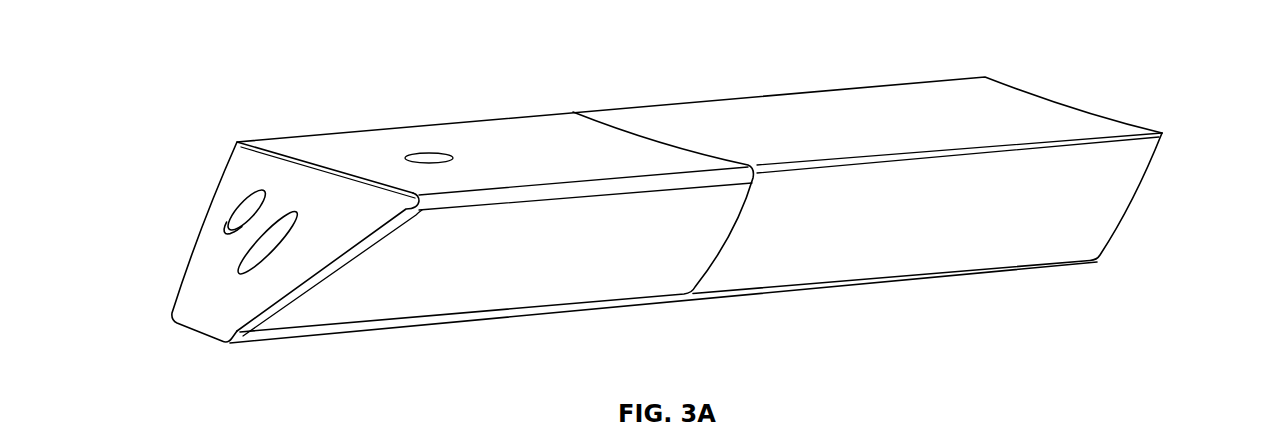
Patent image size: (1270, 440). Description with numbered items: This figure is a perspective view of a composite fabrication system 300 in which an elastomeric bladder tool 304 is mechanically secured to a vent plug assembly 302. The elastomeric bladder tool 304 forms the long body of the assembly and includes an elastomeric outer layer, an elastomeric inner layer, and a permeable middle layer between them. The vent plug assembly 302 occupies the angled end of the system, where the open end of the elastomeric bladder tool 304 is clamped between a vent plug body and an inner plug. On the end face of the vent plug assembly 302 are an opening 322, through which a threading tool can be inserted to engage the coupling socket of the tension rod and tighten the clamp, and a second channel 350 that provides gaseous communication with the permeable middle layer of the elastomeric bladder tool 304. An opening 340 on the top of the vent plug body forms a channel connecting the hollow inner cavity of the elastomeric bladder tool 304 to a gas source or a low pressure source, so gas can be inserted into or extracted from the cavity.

The composite fabrication system 300 is at (1171, 66).
The vent plug assembly 302 is at (205, 127).
The elastomeric bladder tool 304 is at (1062, 70).
The opening 322 is at (253, 258).
The opening 340 is at (430, 157).
The second channel 350 is at (245, 208).